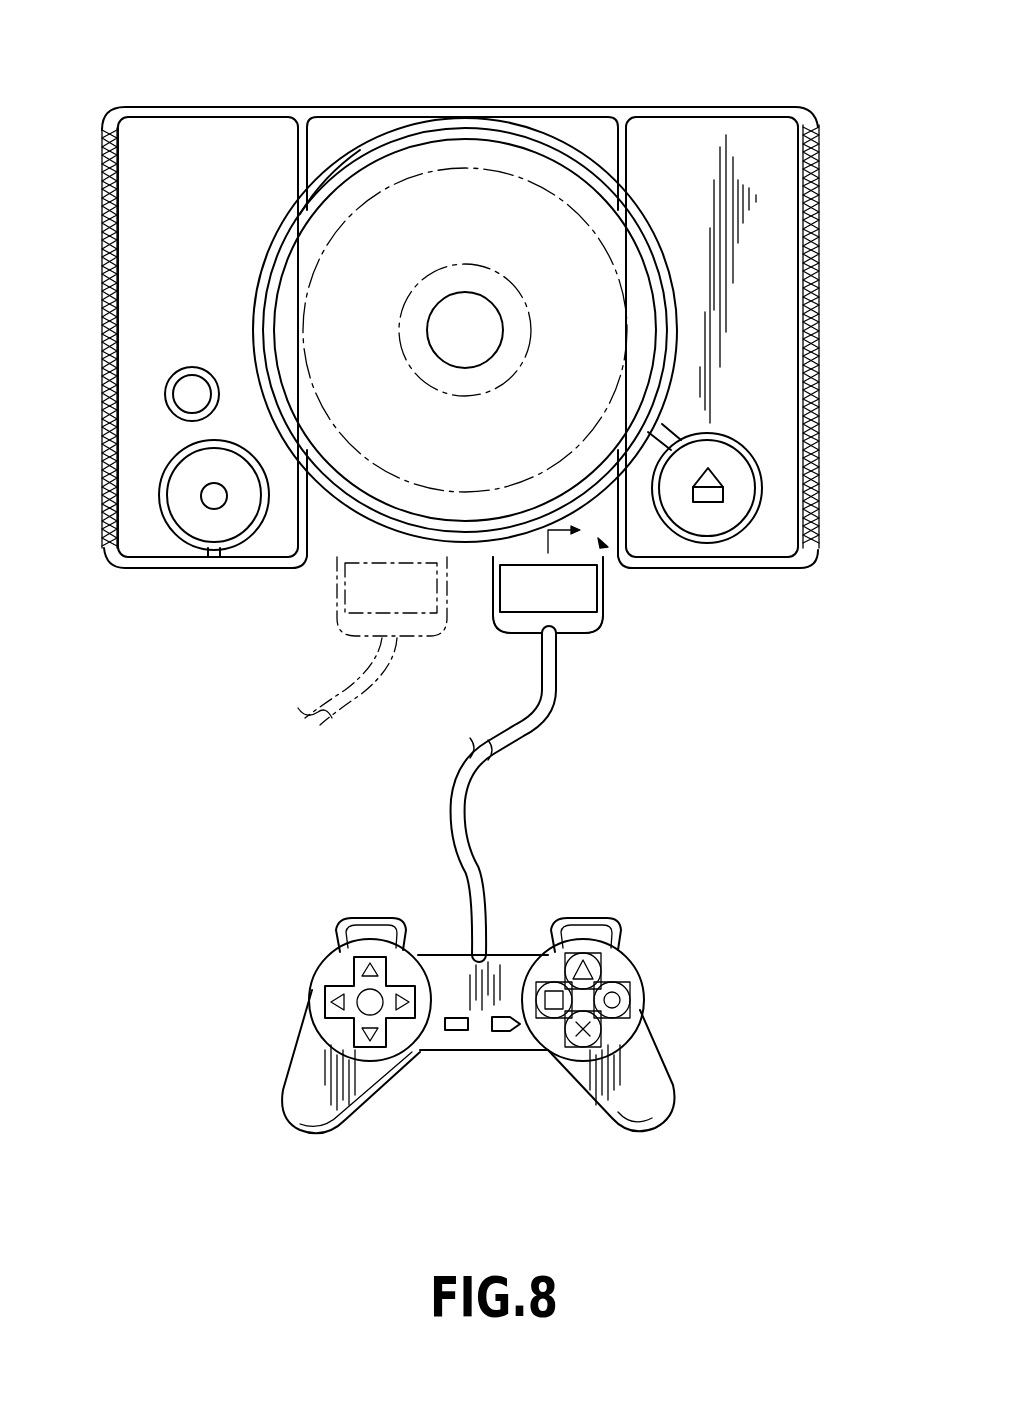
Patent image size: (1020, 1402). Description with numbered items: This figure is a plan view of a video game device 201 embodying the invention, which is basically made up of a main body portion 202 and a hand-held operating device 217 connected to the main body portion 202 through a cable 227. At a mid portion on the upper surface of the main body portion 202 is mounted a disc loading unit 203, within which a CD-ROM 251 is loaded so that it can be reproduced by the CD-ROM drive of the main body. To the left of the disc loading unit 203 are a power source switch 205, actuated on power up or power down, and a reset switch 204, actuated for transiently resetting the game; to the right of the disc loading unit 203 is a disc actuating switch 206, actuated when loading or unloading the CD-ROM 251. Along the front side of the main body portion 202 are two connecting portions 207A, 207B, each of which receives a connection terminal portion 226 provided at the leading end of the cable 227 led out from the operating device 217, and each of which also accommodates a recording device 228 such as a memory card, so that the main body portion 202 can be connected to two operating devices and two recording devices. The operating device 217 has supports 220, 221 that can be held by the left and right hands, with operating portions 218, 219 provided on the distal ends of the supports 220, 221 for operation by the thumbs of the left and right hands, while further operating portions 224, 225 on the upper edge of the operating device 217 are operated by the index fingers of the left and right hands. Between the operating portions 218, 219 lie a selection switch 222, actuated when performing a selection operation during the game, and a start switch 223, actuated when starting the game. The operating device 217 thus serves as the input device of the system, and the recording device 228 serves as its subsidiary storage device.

The video game device 201 is at (272, 66).
The main body portion 202 is at (628, 82).
The disc loading unit 203 is at (447, 143).
The CD-ROM 251 is at (398, 178).
The reset switch 204 is at (186, 366).
The power source switch 205 is at (187, 518).
The disc actuating switch 206 is at (722, 520).
The connecting portion 207A is at (618, 560).
The connecting portion 207B is at (360, 546).
The connection terminal portion 226 is at (603, 620).
The recording device 228 is at (582, 654).
The cable 227 is at (465, 803).
The operating device 217 is at (653, 952).
The operating portion 218 is at (355, 985).
The operating portion 219 is at (605, 1017).
The support 220 is at (300, 1103).
The support 221 is at (655, 1106).
The selection switch 222 is at (452, 1035).
The start switch 223 is at (505, 1042).
The operating portion 224 is at (366, 918).
The operating portion 225 is at (585, 913).